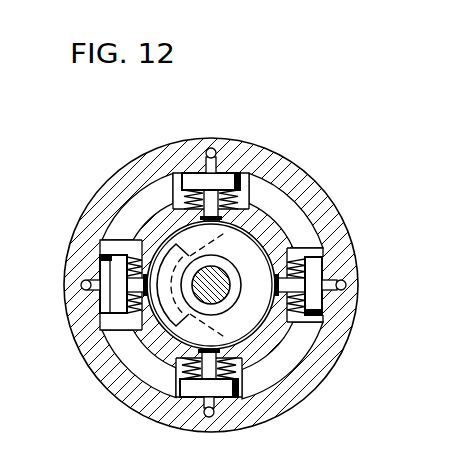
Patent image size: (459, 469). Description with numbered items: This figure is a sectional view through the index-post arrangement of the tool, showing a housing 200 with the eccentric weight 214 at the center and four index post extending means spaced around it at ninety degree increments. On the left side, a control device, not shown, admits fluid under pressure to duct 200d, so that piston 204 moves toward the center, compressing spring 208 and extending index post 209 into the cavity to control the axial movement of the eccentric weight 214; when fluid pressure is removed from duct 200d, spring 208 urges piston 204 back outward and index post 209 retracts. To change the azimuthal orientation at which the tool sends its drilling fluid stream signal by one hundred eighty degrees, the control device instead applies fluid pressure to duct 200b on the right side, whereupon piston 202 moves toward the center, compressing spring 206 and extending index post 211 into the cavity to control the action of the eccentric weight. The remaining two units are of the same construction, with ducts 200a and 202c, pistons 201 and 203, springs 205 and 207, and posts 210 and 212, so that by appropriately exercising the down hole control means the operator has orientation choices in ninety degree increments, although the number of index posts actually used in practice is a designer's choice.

The motor housing 200 is at (296, 166).
The locating pin 200a is at (214, 150).
The duct 200b is at (343, 281).
The duct 200d is at (84, 281).
The plunger head 201 is at (243, 167).
The piston 202 is at (316, 270).
The locating pin 202c is at (214, 417).
The plunger head 203 is at (207, 390).
The piston 204 is at (117, 274).
The compression spring 205 is at (178, 194).
The spring 206 is at (302, 250).
The compression spring 207 is at (246, 370).
The spring 208 is at (106, 339).
The index post 209 is at (128, 359).
The rotor ring 210 is at (170, 229).
The index post 211 is at (272, 317).
The pocket wall 212 is at (177, 367).
The eccentric weight 214 is at (268, 297).